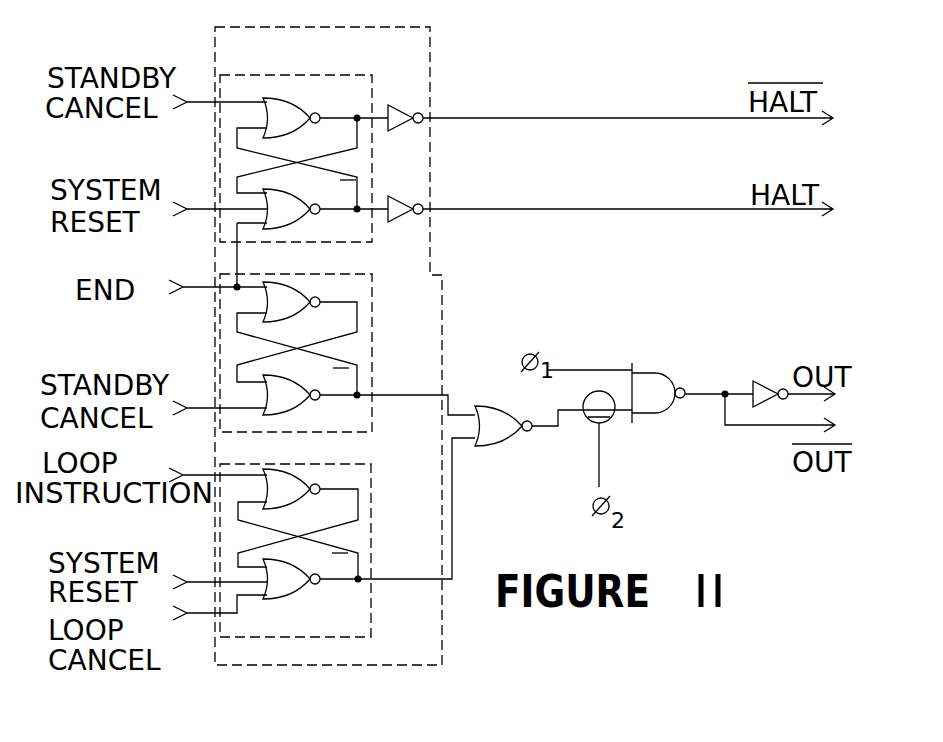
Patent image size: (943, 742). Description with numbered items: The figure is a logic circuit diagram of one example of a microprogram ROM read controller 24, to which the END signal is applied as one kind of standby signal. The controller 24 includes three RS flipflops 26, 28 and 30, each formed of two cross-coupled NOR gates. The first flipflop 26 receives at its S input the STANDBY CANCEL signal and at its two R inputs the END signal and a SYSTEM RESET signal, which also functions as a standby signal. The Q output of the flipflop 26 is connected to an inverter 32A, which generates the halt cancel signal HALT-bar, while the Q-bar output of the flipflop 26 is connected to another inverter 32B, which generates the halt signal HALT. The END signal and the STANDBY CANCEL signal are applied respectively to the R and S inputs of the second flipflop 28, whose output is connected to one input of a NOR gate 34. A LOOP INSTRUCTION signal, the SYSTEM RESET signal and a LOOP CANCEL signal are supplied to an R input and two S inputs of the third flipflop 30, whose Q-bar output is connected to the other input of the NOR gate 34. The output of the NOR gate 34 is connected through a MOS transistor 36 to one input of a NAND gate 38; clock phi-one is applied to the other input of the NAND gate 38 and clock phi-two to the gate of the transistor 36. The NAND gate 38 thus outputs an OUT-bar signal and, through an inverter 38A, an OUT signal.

The microprogram ROM read controller 24 is at (440, 92).
The first flipflop 26 is at (285, 73).
The second flipflop 28 is at (375, 307).
The third flipflop 30 is at (371, 633).
The inverter 32A is at (406, 127).
The inverter 32B is at (406, 220).
The NOR gate 34 is at (483, 447).
The MOS transistor 36 is at (607, 422).
The NAND gate 38 is at (647, 373).
The inverter 38A is at (766, 378).